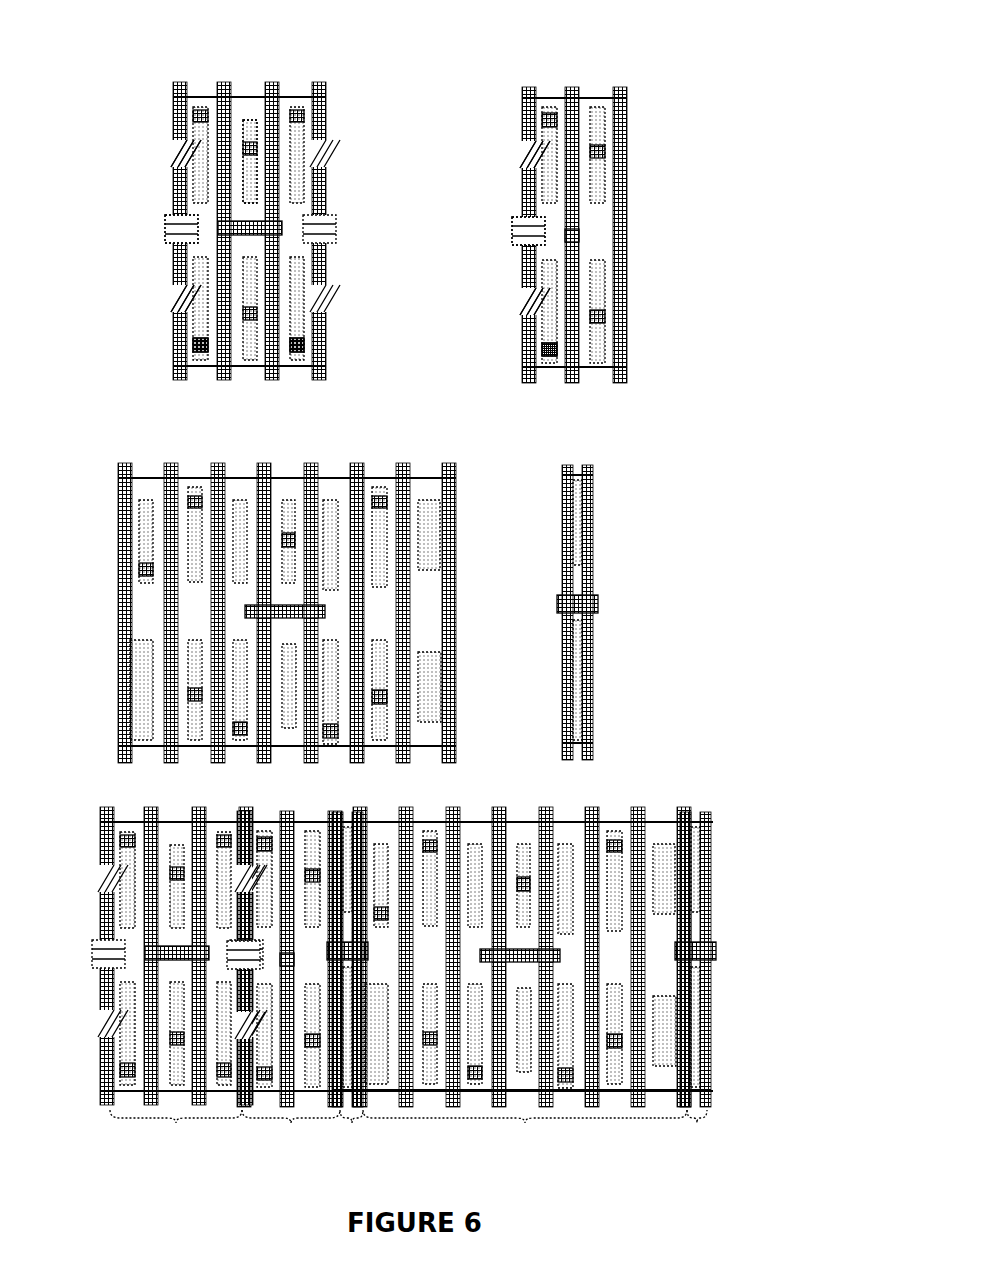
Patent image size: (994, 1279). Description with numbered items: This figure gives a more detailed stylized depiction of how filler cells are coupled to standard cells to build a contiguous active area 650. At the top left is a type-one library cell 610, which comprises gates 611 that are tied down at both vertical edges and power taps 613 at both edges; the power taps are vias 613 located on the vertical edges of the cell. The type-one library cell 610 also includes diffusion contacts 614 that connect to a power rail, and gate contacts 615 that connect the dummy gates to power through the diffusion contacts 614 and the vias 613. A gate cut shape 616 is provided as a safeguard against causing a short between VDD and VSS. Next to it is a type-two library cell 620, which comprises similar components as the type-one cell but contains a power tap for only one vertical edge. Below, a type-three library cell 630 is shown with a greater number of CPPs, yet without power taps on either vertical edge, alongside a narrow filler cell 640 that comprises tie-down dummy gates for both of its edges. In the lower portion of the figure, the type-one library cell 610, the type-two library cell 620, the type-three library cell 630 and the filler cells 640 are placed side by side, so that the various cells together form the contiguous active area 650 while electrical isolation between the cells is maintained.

The type-1 library cell 610 is at (200, 68).
The gates 611 is at (175, 97).
The power taps 613 is at (195, 345).
The diffusion contacts 614 is at (250, 120).
The gate contacts 615 is at (182, 152).
The gate cut shape 616 is at (168, 228).
The type-2 library cell 620 is at (587, 60).
The type-3 library cell 630 is at (285, 450).
The filler cell 640 is at (574, 444).
The contiguous active area 650 is at (662, 750).